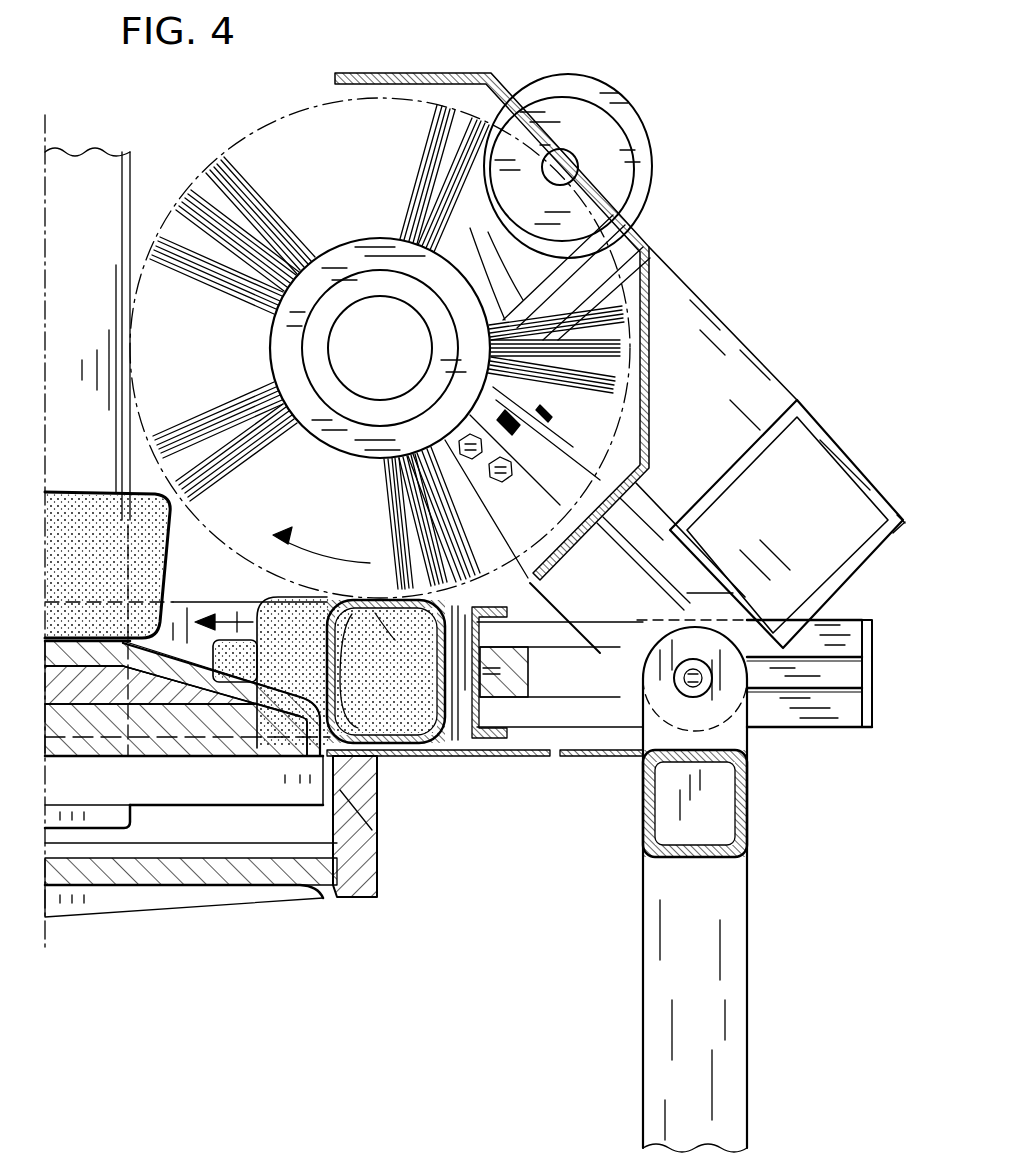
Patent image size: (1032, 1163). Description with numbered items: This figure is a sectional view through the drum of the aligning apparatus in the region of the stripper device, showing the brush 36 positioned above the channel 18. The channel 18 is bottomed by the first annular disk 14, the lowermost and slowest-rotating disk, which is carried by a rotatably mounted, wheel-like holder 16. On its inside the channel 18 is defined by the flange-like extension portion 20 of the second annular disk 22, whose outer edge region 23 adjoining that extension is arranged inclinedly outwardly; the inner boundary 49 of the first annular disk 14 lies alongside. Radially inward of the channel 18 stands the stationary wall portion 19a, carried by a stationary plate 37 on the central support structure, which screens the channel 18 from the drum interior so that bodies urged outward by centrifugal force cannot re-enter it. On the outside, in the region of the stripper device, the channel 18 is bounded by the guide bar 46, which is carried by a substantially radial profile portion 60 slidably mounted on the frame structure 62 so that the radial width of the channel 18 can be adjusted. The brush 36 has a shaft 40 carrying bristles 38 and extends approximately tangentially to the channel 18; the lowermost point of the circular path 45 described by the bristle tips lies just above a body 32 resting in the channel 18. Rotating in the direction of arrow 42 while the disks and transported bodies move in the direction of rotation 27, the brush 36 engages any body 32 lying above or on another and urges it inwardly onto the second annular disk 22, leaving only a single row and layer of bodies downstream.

The wall portion 19a is at (90, 166).
The brush 36 is at (165, 285).
The bristles 38 is at (247, 247).
The shaft 40 is at (310, 352).
The circular path 45 is at (259, 565).
The direction of brush rotation 42 is at (324, 553).
The direction of rotation 27 is at (542, 578).
The body 32 is at (87, 513).
The second annular disk 22 is at (87, 647).
The outer edge region 23 is at (287, 700).
The flange-like extension portion 20 is at (313, 780).
The stationary plate 37 is at (93, 830).
The holder 16 is at (343, 875).
The inner boundary 49 is at (378, 830).
The first annular disk 14 is at (488, 758).
The channel 18 is at (463, 685).
The guide bar 46 is at (448, 703).
The profile portion 60 is at (828, 717).
The frame structure 62 is at (747, 827).